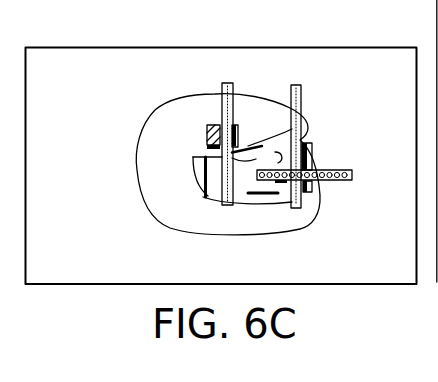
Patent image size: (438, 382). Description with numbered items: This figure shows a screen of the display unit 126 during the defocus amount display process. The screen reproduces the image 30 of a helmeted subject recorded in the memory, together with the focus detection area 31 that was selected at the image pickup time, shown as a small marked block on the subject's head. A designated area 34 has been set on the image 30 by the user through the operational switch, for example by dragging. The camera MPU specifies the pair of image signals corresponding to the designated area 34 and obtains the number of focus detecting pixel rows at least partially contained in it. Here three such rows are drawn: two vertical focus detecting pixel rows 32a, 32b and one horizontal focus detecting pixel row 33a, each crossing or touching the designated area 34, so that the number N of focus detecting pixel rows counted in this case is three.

The display unit 126 is at (314, 43).
The image 30 is at (152, 187).
The focus detection area 31 is at (207, 135).
The focus detecting pixel row 32a is at (226, 84).
The focus detecting pixel row 32b is at (295, 86).
The focus detecting pixel row 33a is at (333, 170).
The designated area 34 is at (303, 157).